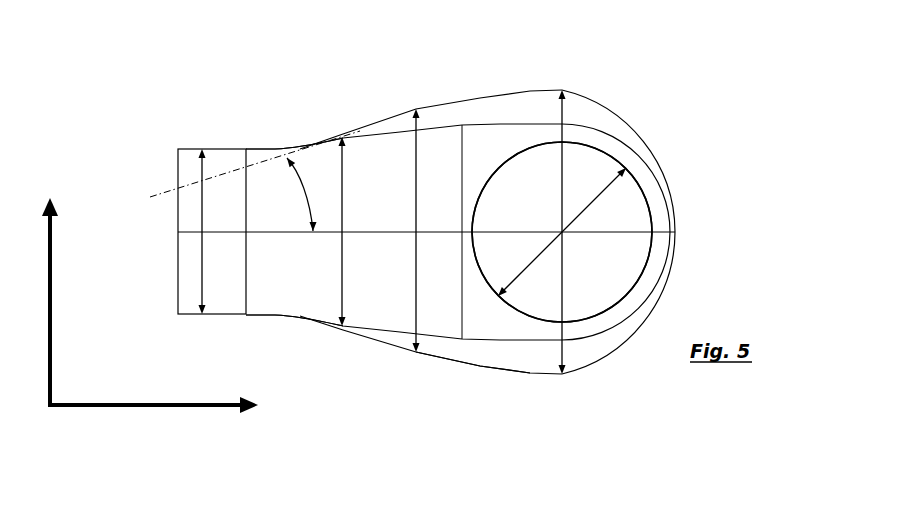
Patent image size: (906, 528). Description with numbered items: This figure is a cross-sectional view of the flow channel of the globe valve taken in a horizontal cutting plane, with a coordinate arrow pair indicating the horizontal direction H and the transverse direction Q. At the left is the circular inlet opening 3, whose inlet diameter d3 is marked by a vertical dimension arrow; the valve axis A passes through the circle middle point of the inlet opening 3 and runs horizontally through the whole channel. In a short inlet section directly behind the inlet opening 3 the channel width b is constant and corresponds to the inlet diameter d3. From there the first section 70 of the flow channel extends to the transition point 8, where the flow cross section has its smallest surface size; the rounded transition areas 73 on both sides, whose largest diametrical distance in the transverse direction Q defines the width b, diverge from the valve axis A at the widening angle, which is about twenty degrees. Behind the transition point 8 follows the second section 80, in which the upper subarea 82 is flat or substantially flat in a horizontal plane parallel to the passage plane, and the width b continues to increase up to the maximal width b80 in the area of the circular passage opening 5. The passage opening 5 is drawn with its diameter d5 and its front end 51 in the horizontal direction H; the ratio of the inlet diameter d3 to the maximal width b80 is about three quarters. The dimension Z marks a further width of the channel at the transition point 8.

The inlet opening 3 is at (177, 200).
The inlet diameter d3 is at (202, 268).
The first section 70 is at (268, 212).
The transition area 73 is at (342, 137).
The channel width b is at (340, 185).
The transition point 8 is at (387, 221).
The second section 80 is at (456, 181).
The upper subarea 82 is at (482, 309).
The passage opening 5 is at (528, 211).
The front end 51 is at (476, 232).
The diameter of passage opening d5 is at (564, 182).
The maximal width b80 is at (564, 182).
The neck width Z is at (350, 231).
The valve axis A is at (220, 233).
The transverse direction Q is at (61, 301).
The horizontal direction H is at (153, 417).